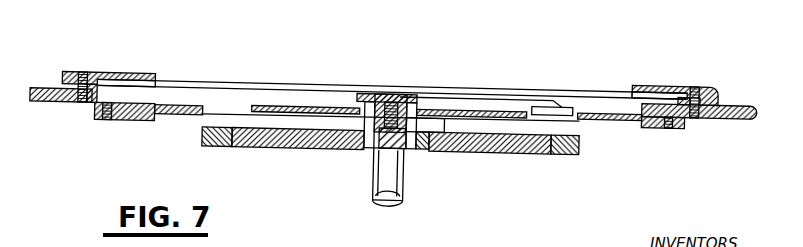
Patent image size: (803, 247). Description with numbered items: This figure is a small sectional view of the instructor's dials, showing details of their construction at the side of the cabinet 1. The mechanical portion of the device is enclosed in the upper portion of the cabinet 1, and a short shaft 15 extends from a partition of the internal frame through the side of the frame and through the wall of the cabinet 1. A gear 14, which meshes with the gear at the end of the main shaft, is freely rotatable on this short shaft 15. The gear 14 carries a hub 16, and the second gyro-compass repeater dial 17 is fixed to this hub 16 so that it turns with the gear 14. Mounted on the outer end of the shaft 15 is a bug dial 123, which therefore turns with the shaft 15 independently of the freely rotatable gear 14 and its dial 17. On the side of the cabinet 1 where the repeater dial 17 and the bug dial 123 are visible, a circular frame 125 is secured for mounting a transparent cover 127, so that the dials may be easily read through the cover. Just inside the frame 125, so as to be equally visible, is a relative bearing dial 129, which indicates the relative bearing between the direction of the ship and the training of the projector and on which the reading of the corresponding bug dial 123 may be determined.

The cabinet 1 is at (393, 95).
The gear 14 is at (225, 148).
The short shaft 15 is at (378, 160).
The hub 16 is at (424, 147).
The second gyro-compass repeater dial 17 is at (268, 106).
The bug dial 123 is at (489, 91).
The circular frame 125 is at (125, 73).
The transparent cover 127 is at (326, 86).
The relative bearing dial 129 is at (598, 117).